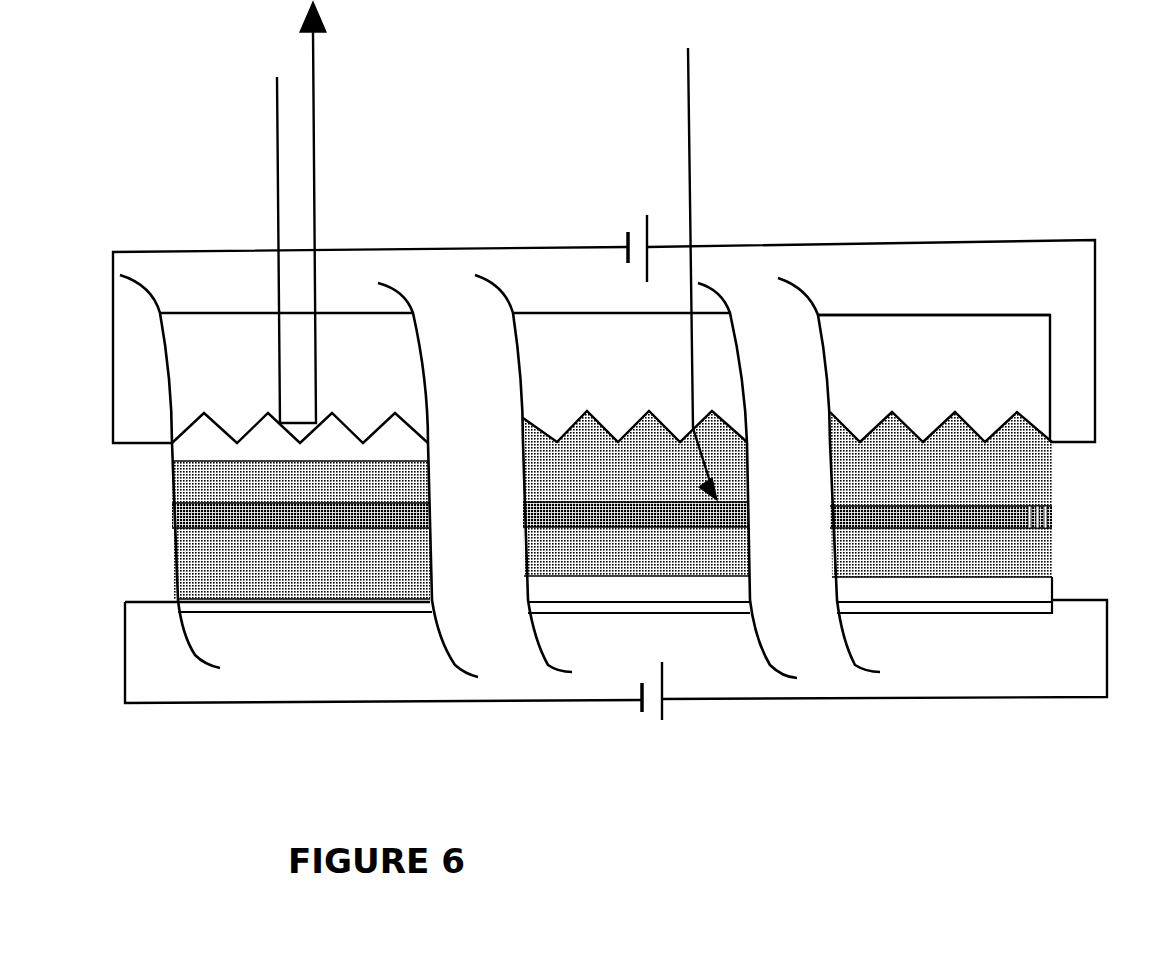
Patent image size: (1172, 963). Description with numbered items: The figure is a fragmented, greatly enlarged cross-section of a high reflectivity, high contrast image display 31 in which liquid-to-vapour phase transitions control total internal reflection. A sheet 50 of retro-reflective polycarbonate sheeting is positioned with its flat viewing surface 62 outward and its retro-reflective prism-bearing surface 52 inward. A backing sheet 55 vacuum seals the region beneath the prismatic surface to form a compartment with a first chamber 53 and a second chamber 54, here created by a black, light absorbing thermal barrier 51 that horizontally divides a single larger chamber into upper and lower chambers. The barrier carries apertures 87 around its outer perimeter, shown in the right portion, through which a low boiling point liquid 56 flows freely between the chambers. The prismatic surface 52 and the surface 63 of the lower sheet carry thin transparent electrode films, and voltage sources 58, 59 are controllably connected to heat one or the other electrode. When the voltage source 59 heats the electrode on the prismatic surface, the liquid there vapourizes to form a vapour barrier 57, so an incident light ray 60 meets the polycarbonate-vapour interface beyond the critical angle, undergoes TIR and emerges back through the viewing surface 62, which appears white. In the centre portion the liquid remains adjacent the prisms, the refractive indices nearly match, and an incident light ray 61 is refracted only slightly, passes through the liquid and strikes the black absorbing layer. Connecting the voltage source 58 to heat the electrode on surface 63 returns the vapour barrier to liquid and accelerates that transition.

The electroluminescent photovoltaic device 31 is at (1078, 752).
The sheet 50 is at (1012, 343).
The thermal barrier 51 is at (998, 505).
The retro-reflective prism-bearing surface 52 is at (226, 427).
The first chamber 53 is at (170, 490).
The second chamber 54 is at (175, 566).
The backing sheet 55 is at (222, 607).
The liquid 56 is at (428, 480).
The vapour barrier 57 is at (188, 455).
The voltage source 58 is at (661, 724).
The voltage source 59 is at (633, 222).
The light ray 60 is at (277, 133).
The incident light ray 61 is at (688, 83).
The viewing surface 62 is at (925, 310).
The surface of lower sheet 63 is at (1040, 597).
The apertures 87 is at (1055, 511).